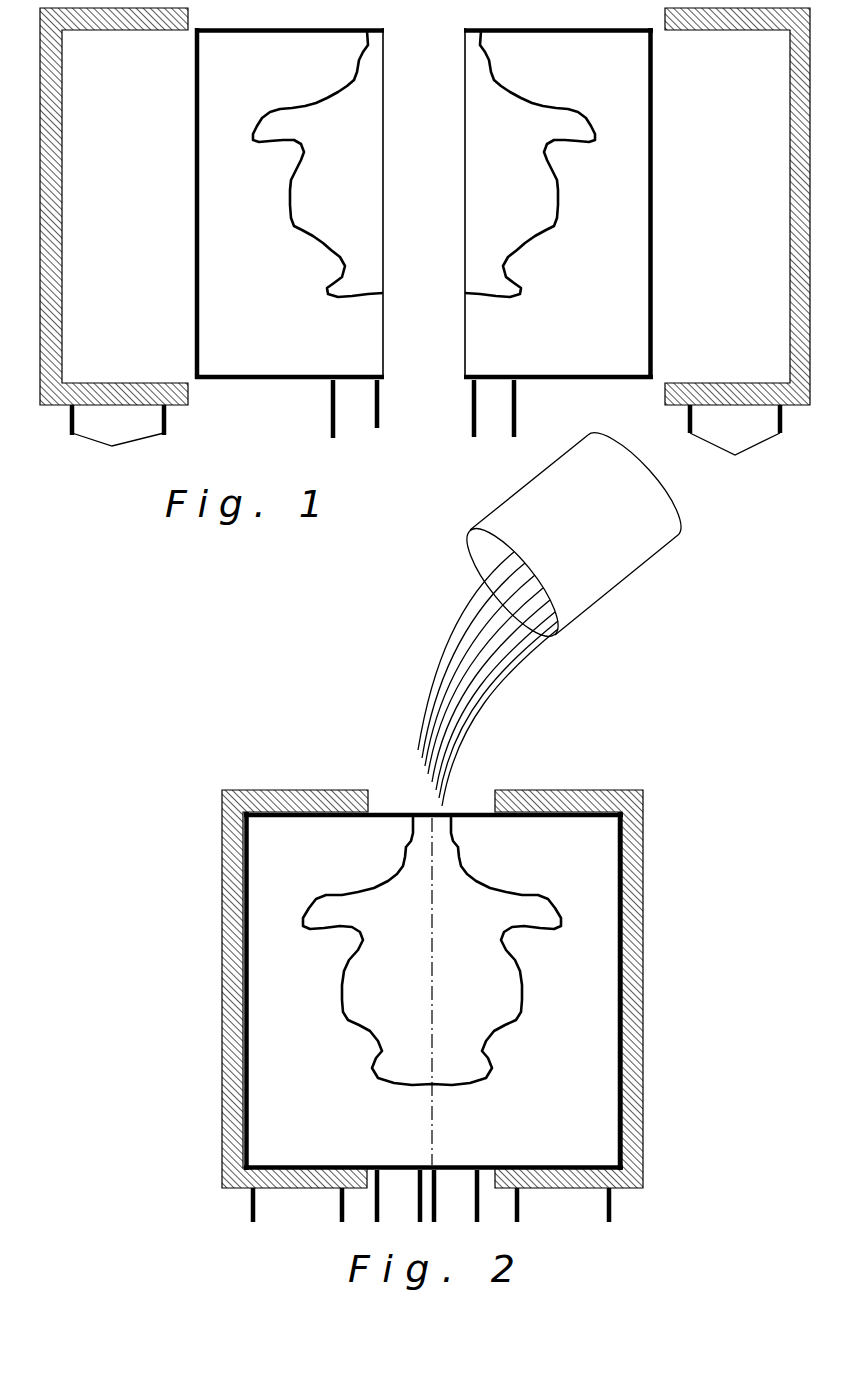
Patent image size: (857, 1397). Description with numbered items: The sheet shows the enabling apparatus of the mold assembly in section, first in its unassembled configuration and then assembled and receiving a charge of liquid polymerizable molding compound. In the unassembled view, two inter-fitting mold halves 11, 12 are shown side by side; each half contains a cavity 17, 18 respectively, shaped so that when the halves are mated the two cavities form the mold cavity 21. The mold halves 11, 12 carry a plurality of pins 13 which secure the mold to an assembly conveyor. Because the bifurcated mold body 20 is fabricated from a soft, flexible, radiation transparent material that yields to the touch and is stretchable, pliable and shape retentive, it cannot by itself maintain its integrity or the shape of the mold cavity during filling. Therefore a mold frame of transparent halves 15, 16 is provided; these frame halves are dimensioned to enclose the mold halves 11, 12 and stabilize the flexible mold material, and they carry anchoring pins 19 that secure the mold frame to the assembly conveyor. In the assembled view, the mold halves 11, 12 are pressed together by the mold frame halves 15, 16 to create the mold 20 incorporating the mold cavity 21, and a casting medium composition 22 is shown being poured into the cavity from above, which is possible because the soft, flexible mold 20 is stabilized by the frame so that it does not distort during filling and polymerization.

In FIG. 1, the mold half 11 is at (277, 299).
In FIG. 1, the mold half 12 is at (565, 319).
In FIG. 1, the pins 13 is at (473, 435).
In FIG. 1, the mold frame half 15 is at (140, 173).
In FIG. 2, the mold frame half 15 is at (223, 934).
In FIG. 1, the mold frame half 16 is at (750, 175).
In FIG. 2, the mold frame half 16 is at (643, 925).
In FIG. 1, the cavity 17 is at (323, 199).
In FIG. 1, the cavity 18 is at (528, 195).
In FIG. 1, the anchoring pins 19 is at (426, 446).
In FIG. 2, the mold body 20 is at (343, 1100).
In FIG. 2, the mold cavity 21 is at (427, 993).
In FIG. 2, the casting medium composition 22 is at (517, 663).